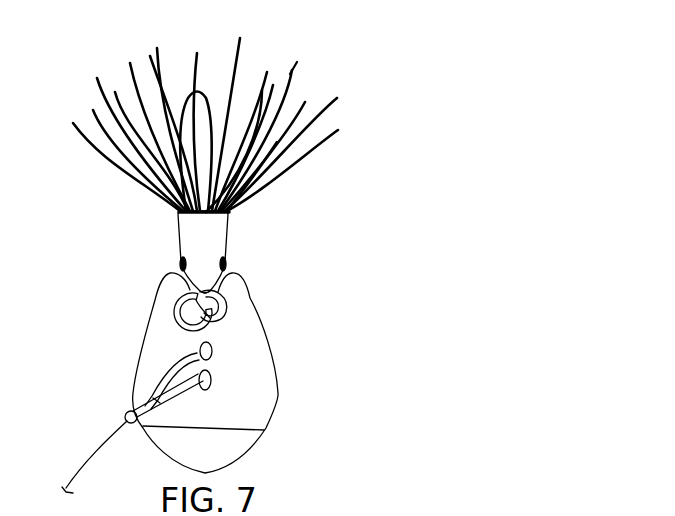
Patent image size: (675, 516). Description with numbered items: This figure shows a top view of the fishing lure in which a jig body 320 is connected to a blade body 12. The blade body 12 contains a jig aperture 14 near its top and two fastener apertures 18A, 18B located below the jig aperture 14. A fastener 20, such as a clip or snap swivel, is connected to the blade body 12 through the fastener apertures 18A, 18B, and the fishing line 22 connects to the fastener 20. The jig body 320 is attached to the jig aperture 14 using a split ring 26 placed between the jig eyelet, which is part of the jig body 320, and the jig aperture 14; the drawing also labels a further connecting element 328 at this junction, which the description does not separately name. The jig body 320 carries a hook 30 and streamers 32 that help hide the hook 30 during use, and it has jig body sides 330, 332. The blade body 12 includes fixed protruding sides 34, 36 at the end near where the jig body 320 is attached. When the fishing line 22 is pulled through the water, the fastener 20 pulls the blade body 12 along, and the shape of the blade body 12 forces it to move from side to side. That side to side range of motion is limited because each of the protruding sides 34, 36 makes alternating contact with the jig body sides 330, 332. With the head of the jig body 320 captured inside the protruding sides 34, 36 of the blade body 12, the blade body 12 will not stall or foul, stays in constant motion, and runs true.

The blade body 12 is at (259, 372).
The jig aperture 14 is at (210, 327).
The fastener aperture 18A is at (199, 351).
The fastener aperture 18B is at (212, 381).
The fastener 20 is at (146, 403).
The fishing line 22 is at (82, 470).
The split ring 26 is at (178, 313).
The hook 30 is at (200, 93).
The streamers 32 is at (294, 68).
The protruding side 34 is at (199, 297).
The protruding side 36 is at (222, 308).
The jig body 320 is at (217, 237).
The clip 328 is at (232, 281).
The jig body side 330 is at (184, 270).
The jig body side 332 is at (228, 248).